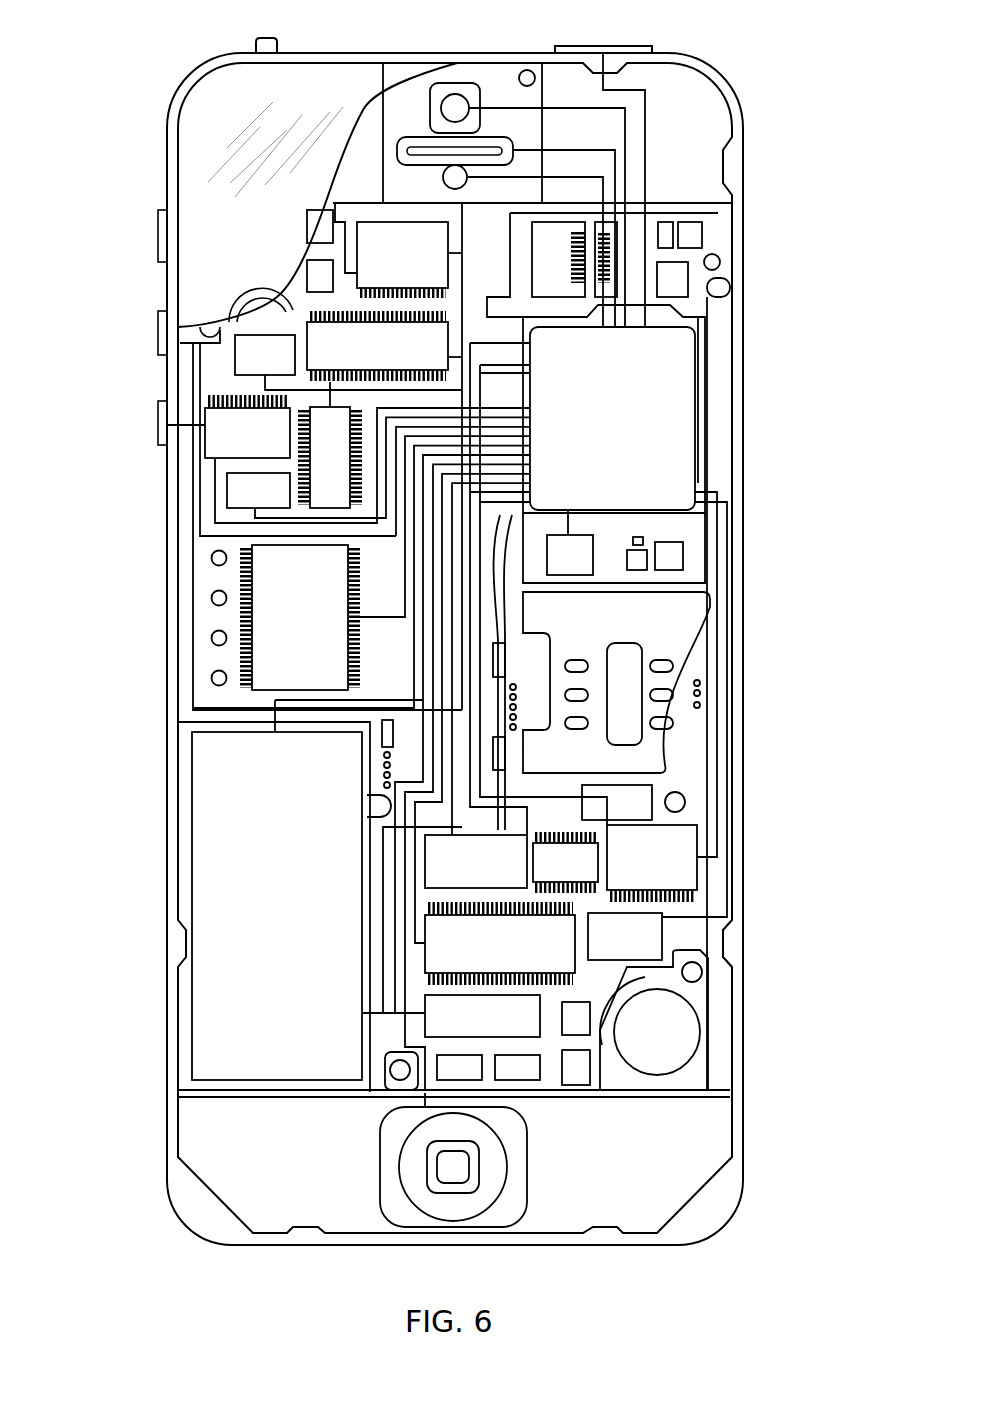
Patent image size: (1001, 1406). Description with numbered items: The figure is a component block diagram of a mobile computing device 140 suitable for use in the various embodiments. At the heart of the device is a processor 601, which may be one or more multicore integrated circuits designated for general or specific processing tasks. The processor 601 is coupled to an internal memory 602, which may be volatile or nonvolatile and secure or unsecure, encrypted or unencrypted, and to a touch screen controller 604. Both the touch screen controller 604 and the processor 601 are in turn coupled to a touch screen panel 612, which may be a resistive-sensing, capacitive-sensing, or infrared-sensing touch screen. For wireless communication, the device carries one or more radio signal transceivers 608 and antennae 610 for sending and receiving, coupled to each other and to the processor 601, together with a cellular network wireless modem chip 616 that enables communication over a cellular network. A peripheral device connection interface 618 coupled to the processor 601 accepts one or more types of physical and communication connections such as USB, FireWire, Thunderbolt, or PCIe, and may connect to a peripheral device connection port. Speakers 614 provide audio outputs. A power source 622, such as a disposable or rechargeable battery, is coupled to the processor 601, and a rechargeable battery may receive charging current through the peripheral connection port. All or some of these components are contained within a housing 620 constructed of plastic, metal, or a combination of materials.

The mobile computing device 140 is at (175, 80).
The touch screen panel 612 is at (195, 190).
The speakers 614 is at (415, 137).
The radio signal transceivers 608 is at (647, 233).
The antennae 610 is at (690, 277).
The touch screen controller 604 is at (402, 257).
The internal memory 602 is at (377, 346).
The processor 601 is at (612, 418).
The power source 622 is at (277, 906).
The cellular network wireless modem chip 616 is at (500, 944).
The peripheral device connection interface 618 is at (482, 1016).
The housing 620 is at (748, 1083).